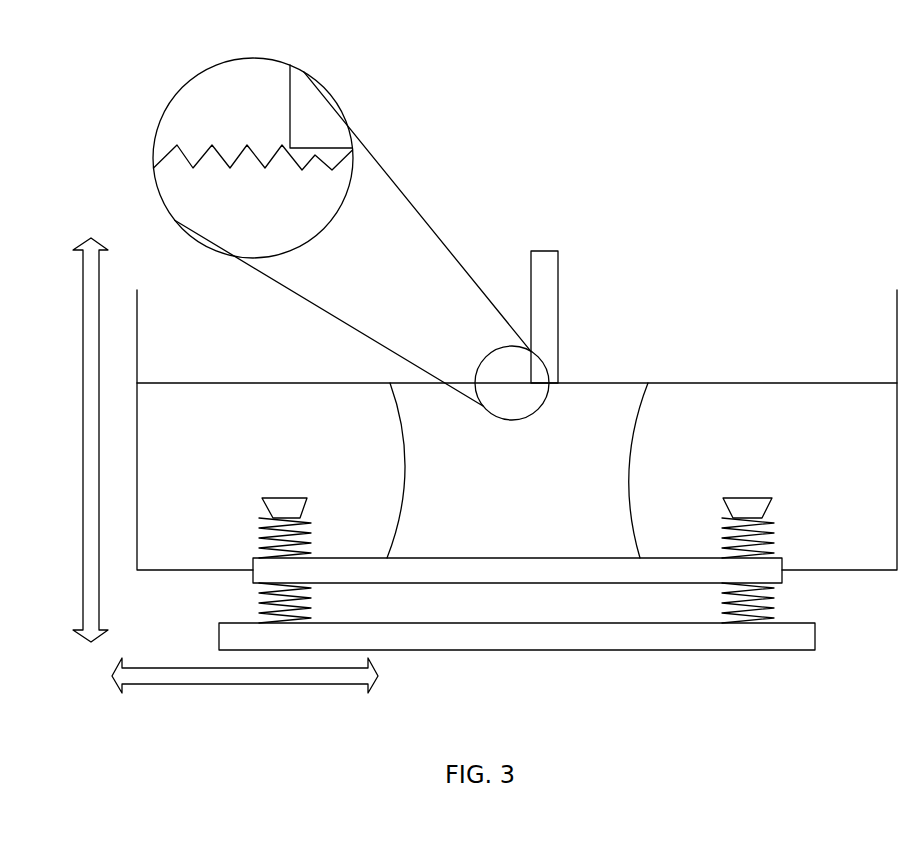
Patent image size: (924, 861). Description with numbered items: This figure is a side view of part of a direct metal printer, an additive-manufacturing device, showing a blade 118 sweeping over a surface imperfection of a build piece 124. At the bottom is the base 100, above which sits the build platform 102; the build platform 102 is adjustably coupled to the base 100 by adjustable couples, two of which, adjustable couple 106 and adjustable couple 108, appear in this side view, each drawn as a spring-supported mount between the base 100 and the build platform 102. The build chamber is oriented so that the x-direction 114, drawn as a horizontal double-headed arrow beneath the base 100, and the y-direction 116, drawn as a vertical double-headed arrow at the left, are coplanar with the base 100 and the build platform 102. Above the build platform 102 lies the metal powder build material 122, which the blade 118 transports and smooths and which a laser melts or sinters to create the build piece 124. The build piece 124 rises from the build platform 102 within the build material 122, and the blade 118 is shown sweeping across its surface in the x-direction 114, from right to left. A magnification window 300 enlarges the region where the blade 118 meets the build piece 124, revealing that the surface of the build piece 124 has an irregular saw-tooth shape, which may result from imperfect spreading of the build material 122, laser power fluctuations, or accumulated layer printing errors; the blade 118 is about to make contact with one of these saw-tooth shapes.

The base 100 is at (517, 636).
The build platform 102 is at (517, 570).
The adjustable couple 106 is at (287, 498).
The adjustable couple 108 is at (748, 498).
The x-direction 114 is at (378, 676).
The y-direction 116 is at (91, 238).
The blade 118 is at (310, 73).
The build material 122 is at (517, 430).
The build piece 124 is at (401, 315).
The magnification window 300 is at (200, 72).